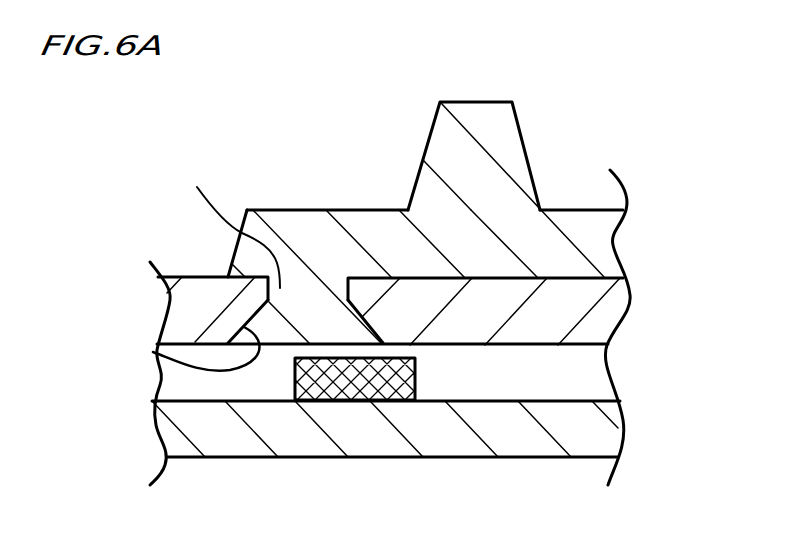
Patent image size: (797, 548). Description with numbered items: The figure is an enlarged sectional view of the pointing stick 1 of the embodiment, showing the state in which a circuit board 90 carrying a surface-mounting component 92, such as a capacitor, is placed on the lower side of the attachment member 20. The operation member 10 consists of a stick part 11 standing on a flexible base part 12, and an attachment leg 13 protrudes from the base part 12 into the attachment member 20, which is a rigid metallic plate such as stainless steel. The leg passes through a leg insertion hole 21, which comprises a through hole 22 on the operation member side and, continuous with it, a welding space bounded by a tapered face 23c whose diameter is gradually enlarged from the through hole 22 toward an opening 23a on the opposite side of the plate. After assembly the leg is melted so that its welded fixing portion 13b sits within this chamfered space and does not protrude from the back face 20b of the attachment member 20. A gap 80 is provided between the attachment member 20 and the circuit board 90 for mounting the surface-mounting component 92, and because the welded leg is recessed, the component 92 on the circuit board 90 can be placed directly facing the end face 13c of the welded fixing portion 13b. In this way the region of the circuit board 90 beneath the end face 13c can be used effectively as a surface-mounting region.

The pointing stick 1 is at (393, 126).
The operation member 10 is at (548, 146).
The stick part 11 is at (480, 102).
The flexible base part 12 is at (317, 209).
The attachment leg 13 is at (322, 292).
The welded fixing portion 13b is at (285, 332).
The end face 13c is at (352, 336).
The attachment member 20 is at (617, 306).
The back face 20b is at (593, 346).
The leg insertion hole 21 is at (260, 180).
The through hole 22 is at (280, 288).
The opening 23a is at (262, 342).
The tapered face 23c is at (153, 352).
The gap 80 is at (187, 382).
The circuit board 90 is at (550, 448).
The surface-mounting component 92 is at (415, 363).